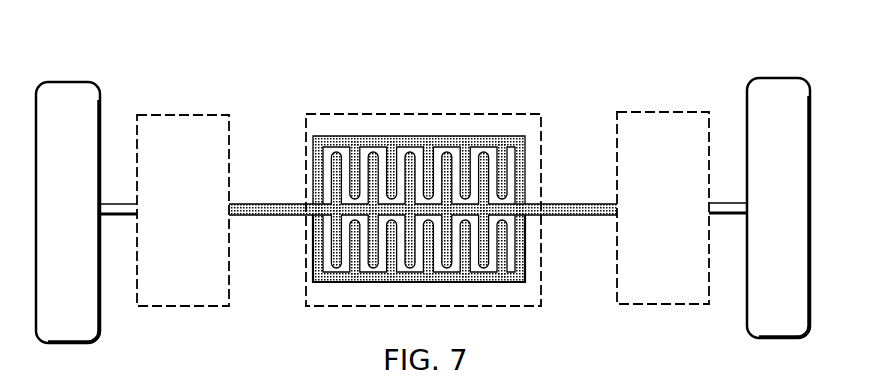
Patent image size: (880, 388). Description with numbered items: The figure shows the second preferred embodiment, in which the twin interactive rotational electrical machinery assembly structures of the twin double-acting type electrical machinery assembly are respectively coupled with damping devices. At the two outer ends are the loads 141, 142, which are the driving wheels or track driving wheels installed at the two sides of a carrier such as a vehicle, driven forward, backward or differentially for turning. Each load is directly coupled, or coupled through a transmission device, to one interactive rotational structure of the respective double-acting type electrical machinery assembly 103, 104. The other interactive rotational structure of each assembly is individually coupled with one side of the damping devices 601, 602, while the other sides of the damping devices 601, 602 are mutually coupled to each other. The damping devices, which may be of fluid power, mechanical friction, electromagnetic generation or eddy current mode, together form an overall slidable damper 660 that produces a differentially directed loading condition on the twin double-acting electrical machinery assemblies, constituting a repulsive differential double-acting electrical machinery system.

The load 141 is at (70, 108).
The load 142 is at (777, 103).
The double-acting type electrical machinery assembly 103 is at (178, 115).
The double-acting type electrical machinery assembly 104 is at (635, 112).
The slidable damper 660 is at (423, 174).
The damping device 601 is at (327, 147).
The damping device 602 is at (510, 138).